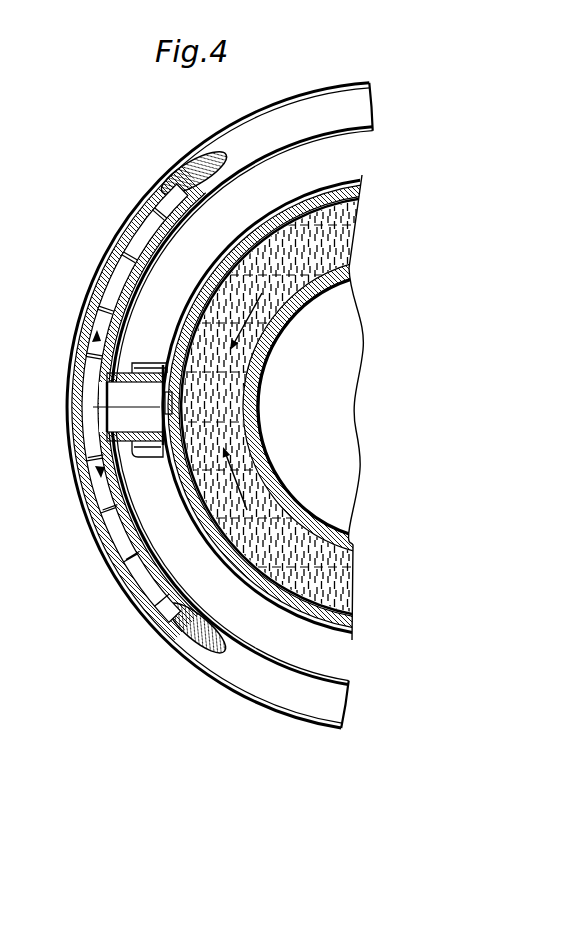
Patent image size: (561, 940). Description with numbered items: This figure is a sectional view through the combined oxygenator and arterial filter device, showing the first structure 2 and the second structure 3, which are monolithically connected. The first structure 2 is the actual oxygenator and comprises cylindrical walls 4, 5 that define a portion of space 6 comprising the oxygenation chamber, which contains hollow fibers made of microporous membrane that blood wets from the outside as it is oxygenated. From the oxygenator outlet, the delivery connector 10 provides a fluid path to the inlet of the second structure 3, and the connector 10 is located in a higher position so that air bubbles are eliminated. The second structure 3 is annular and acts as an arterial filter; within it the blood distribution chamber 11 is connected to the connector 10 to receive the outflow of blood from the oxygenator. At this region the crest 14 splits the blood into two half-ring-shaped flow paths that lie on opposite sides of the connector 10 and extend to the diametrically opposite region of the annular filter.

The first structure 2 is at (262, 410).
The second structure 3 is at (245, 704).
The cylindrical wall 4 is at (352, 618).
The cylindrical wall 5 is at (340, 538).
The portion of space 6 is at (277, 533).
The delivery connector 10 is at (141, 372).
The blood distribution chamber 11 is at (110, 278).
The crest 14 is at (160, 407).